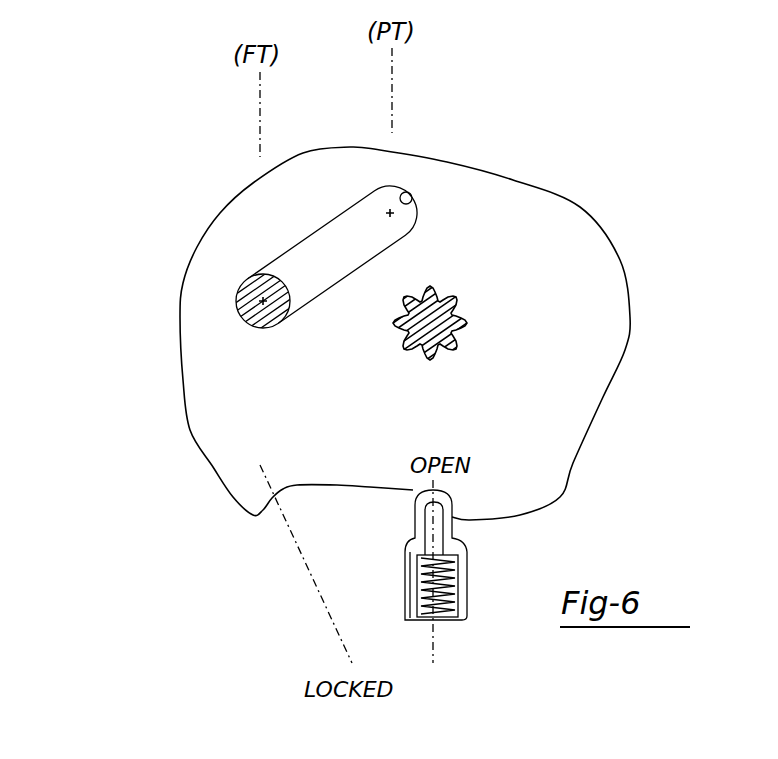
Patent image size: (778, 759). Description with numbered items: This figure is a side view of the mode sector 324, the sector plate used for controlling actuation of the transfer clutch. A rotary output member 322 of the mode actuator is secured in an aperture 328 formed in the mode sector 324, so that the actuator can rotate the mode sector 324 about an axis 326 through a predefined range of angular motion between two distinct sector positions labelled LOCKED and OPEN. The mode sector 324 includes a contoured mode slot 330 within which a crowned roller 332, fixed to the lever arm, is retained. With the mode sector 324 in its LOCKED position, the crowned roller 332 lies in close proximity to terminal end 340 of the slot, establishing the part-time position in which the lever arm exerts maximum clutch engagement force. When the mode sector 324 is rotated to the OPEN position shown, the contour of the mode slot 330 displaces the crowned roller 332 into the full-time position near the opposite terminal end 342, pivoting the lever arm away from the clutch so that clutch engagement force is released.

The rotary output member 322 is at (460, 341).
The mode sector 324 is at (620, 261).
The axis 326 is at (440, 291).
The aperture 328 is at (418, 356).
The mode slot 330 is at (348, 276).
The crowned roller 332 is at (246, 298).
The terminal end 340 is at (412, 203).
The terminal end 342 is at (270, 327).